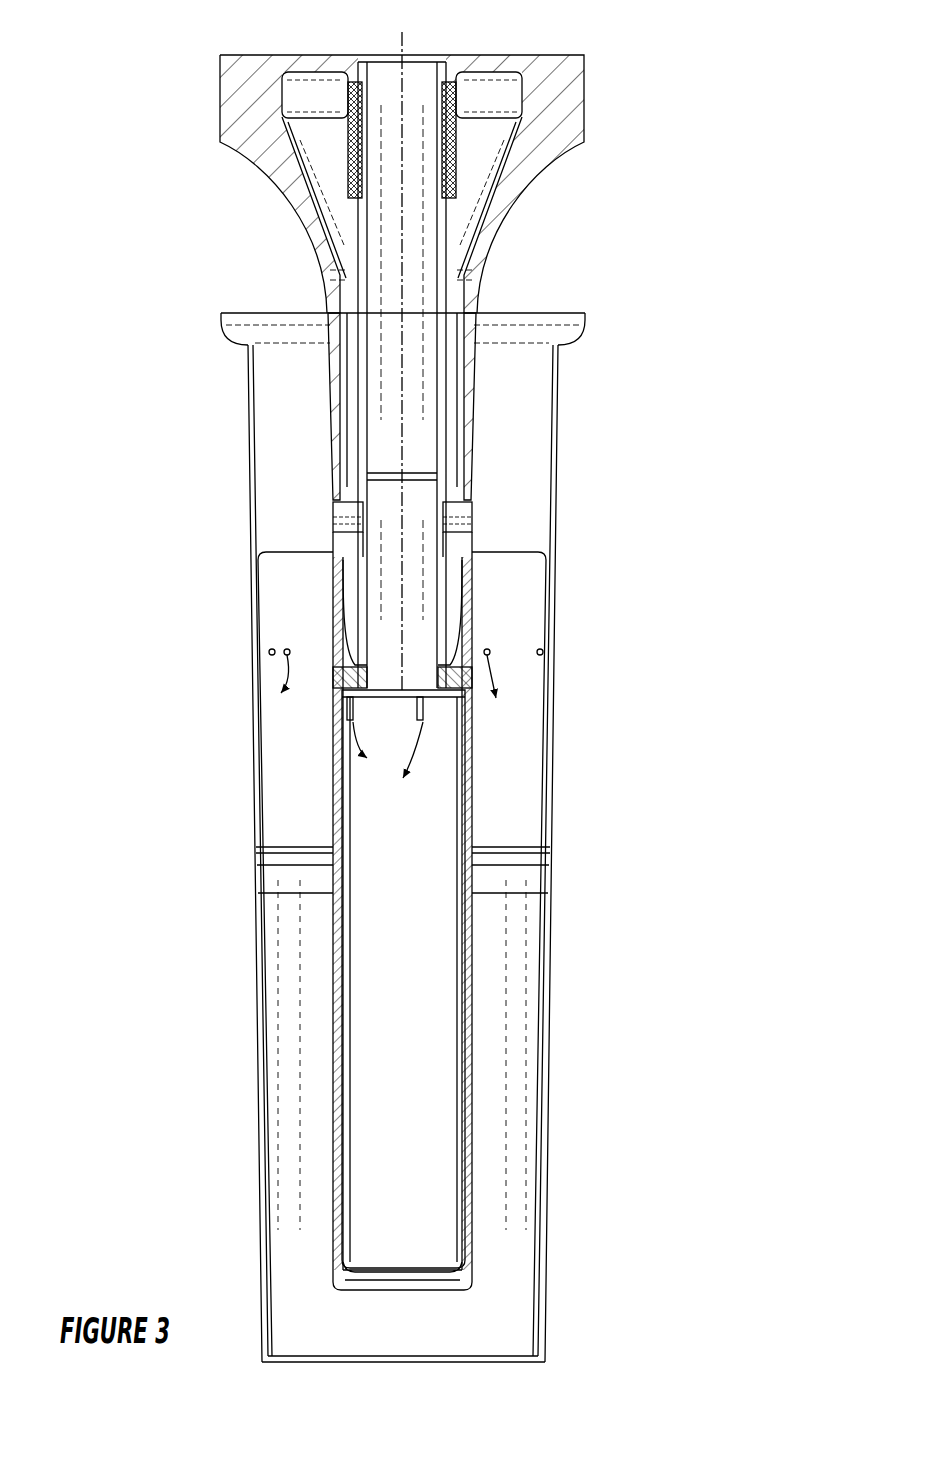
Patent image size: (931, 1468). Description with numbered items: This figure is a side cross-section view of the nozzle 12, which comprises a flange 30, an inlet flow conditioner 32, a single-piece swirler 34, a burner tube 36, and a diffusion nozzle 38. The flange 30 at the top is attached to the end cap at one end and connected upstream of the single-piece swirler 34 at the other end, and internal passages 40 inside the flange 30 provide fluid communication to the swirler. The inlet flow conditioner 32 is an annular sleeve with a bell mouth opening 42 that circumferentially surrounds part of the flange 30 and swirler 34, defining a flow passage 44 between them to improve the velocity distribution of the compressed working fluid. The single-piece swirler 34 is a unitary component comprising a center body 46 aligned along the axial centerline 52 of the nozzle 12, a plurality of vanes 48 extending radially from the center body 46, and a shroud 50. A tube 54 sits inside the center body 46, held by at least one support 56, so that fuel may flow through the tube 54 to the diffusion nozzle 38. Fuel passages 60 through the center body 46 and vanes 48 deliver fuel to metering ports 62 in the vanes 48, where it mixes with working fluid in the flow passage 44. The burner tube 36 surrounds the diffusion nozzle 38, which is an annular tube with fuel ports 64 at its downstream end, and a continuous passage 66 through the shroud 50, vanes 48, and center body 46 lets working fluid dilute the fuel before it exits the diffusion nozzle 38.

The nozzle 12 is at (126, 329).
The flange 30 is at (585, 113).
The inlet flow conditioner 32 is at (560, 480).
The single-piece swirler 34 is at (480, 617).
The burner tube 36 is at (550, 925).
The diffusion nozzle 38 is at (333, 929).
The internal passages 40 is at (494, 109).
The bell mouth opening 42 is at (580, 318).
The flow passage 44 is at (510, 409).
The center body 46 is at (474, 533).
The vanes 48 is at (282, 552).
The shroud 50 is at (555, 785).
The axial centerline 52 is at (397, 48).
The tube 54 is at (338, 497).
The support 56 is at (353, 537).
The fuel passages 60 is at (338, 603).
The metering ports 62 is at (269, 654).
The fuel ports 64 is at (447, 1290).
The continuous passage 66 is at (345, 705).